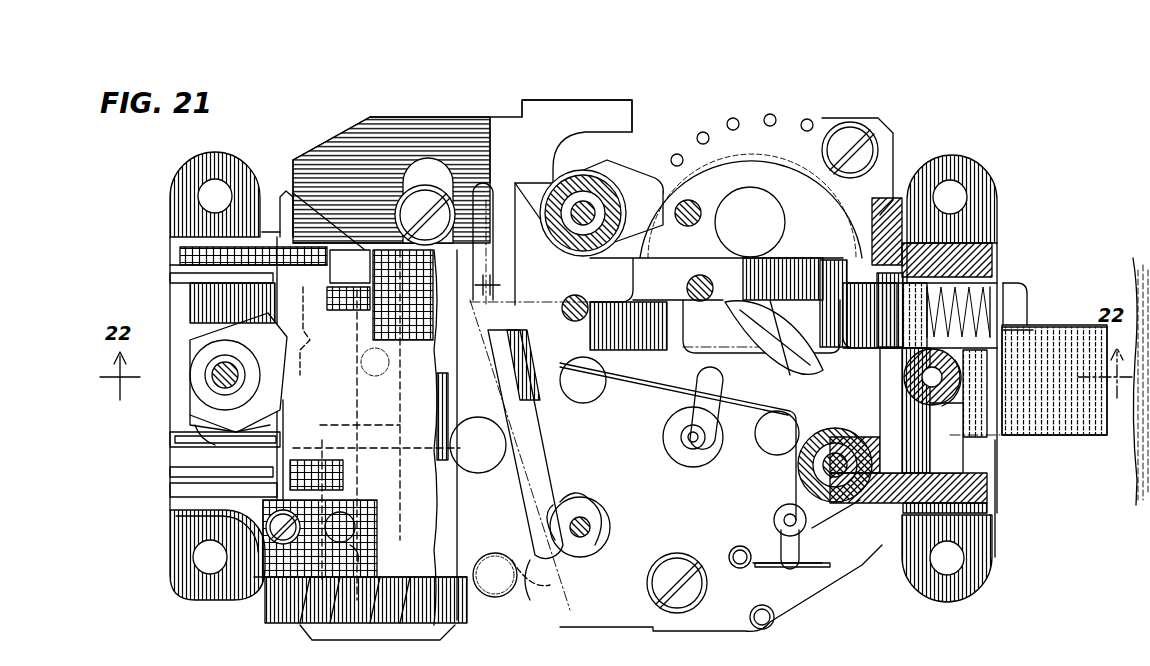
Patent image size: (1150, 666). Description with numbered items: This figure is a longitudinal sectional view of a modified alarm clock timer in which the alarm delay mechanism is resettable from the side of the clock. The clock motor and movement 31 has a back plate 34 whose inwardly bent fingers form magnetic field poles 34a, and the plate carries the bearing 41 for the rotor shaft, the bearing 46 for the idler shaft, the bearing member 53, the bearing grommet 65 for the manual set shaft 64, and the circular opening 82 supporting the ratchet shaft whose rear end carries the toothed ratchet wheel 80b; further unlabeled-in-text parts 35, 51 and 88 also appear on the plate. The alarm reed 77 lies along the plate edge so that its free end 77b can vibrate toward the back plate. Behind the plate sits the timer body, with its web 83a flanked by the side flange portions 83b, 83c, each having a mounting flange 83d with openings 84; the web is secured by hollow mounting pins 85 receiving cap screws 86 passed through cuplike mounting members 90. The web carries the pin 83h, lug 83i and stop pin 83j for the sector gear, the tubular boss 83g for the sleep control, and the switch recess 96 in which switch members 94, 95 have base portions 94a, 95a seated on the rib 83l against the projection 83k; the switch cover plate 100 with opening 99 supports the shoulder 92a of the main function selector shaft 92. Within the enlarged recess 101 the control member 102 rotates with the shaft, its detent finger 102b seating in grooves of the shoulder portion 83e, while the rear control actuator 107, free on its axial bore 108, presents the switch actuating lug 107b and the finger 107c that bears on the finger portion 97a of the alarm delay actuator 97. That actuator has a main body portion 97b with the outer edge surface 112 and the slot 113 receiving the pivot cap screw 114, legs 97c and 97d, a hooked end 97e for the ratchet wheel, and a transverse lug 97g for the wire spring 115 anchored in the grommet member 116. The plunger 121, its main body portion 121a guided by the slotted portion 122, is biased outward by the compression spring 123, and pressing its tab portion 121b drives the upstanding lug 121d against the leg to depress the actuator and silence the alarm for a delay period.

The clock motor and movement 31 is at (885, 597).
The back plate 34 is at (808, 590).
The magnetic field poles 34a is at (745, 130).
The screw 35 is at (738, 572).
The plastic bearing 41 is at (752, 196).
The plastic bearing 46 is at (810, 378).
The roller 51 is at (566, 392).
The plastic bearing member 53 is at (480, 425).
The manual set shaft 64 is at (600, 505).
The plastic bearing grommet 65 is at (605, 522).
The alarm reed 77 is at (285, 193).
The free end of the alarm reed 77b is at (282, 200).
The toothed ratchet wheel 80b is at (495, 540).
The circular opening 82 is at (495, 590).
The web or back portion 83a is at (1054, 474).
The side flange portion 83b is at (975, 245).
The side flange portion 83c is at (175, 260).
The mounting flange 83d is at (203, 158).
The shoulder portion 83e is at (180, 472).
The tubular boss portion 83g is at (978, 448).
The pin 83h is at (692, 202).
The lug or projection 83i is at (560, 621).
The stop pin 83j is at (688, 300).
The mounting pin or projection 83k is at (358, 516).
The rib portion 83l is at (362, 548).
The opening 84 is at (205, 190).
The hollow mounting pin 85 is at (594, 200).
The cap screw 86 is at (562, 180).
The pawl 88 is at (712, 455).
The cuplike mounting member 90 is at (612, 180).
The main function selector shaft 92 is at (215, 370).
The reduced diameter shoulder 92a is at (511, 642).
The switch member 94 is at (370, 480).
The base portion 94a is at (358, 600).
The switch member 95 is at (375, 460).
The base portion 95a is at (262, 555).
The switch recess 96 is at (380, 432).
The alarm delay actuator 97 is at (375, 104).
The finger portion 97a is at (205, 448).
The upper main body portion 97b is at (425, 130).
The leg portion 97c is at (446, 362).
The leg portion 97d is at (525, 430).
The hooked end portion 97e is at (565, 586).
The transverse lug 97g is at (520, 290).
The opening 99 is at (490, 660).
The switch cover plate 100 is at (288, 628).
The enlarged recess 101 is at (200, 280).
The control member 102 is at (215, 420).
The detent finger 102b is at (302, 410).
The switch and alarm delay control actuator 107 is at (205, 330).
The switch actuating lug 107b is at (246, 323).
The finger 107c is at (300, 385).
The axial bore 108 is at (215, 383).
The outer edge surface 112 is at (293, 165).
The slot 113 is at (432, 185).
The cap screw 114 is at (440, 200).
The wire spring 115 is at (652, 390).
The grommet member 116 is at (774, 520).
The plunger 121 is at (700, 262).
The main body portion 121a is at (888, 340).
The bracket or tab portion 121b is at (1050, 330).
The upstanding lug 121d is at (562, 304).
The slotted out portion 122 is at (745, 372).
The compression spring 123 is at (1000, 276).